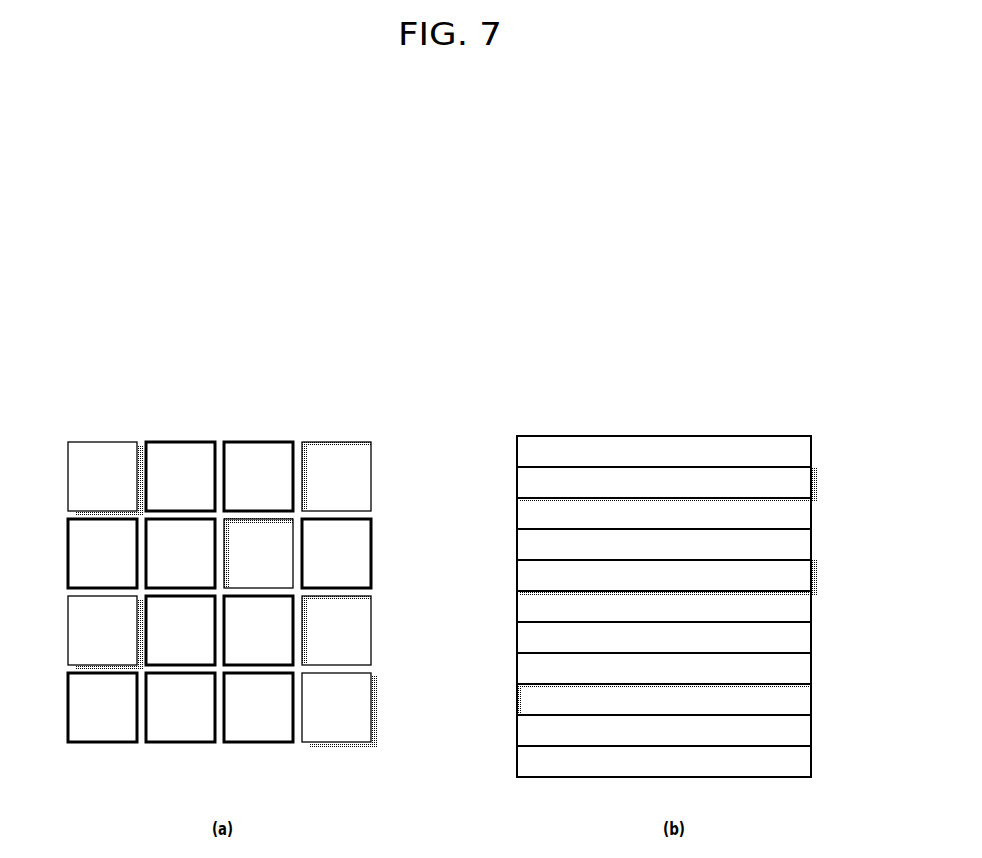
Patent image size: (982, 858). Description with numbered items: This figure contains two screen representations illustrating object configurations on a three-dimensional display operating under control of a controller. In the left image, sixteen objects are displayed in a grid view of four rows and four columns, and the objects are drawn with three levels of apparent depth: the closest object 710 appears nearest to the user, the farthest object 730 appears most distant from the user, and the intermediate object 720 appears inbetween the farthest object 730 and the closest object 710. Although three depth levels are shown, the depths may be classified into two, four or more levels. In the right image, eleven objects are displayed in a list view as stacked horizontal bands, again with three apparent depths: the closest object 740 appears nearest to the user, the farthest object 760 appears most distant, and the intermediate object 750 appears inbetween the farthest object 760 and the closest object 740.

The closest object 710 is at (102, 442).
The intermediate object 720 is at (181, 442).
The farthest object 730 is at (335, 442).
The closest object 740 is at (818, 484).
The intermediate object 750 is at (812, 640).
The farthest object 760 is at (812, 703).